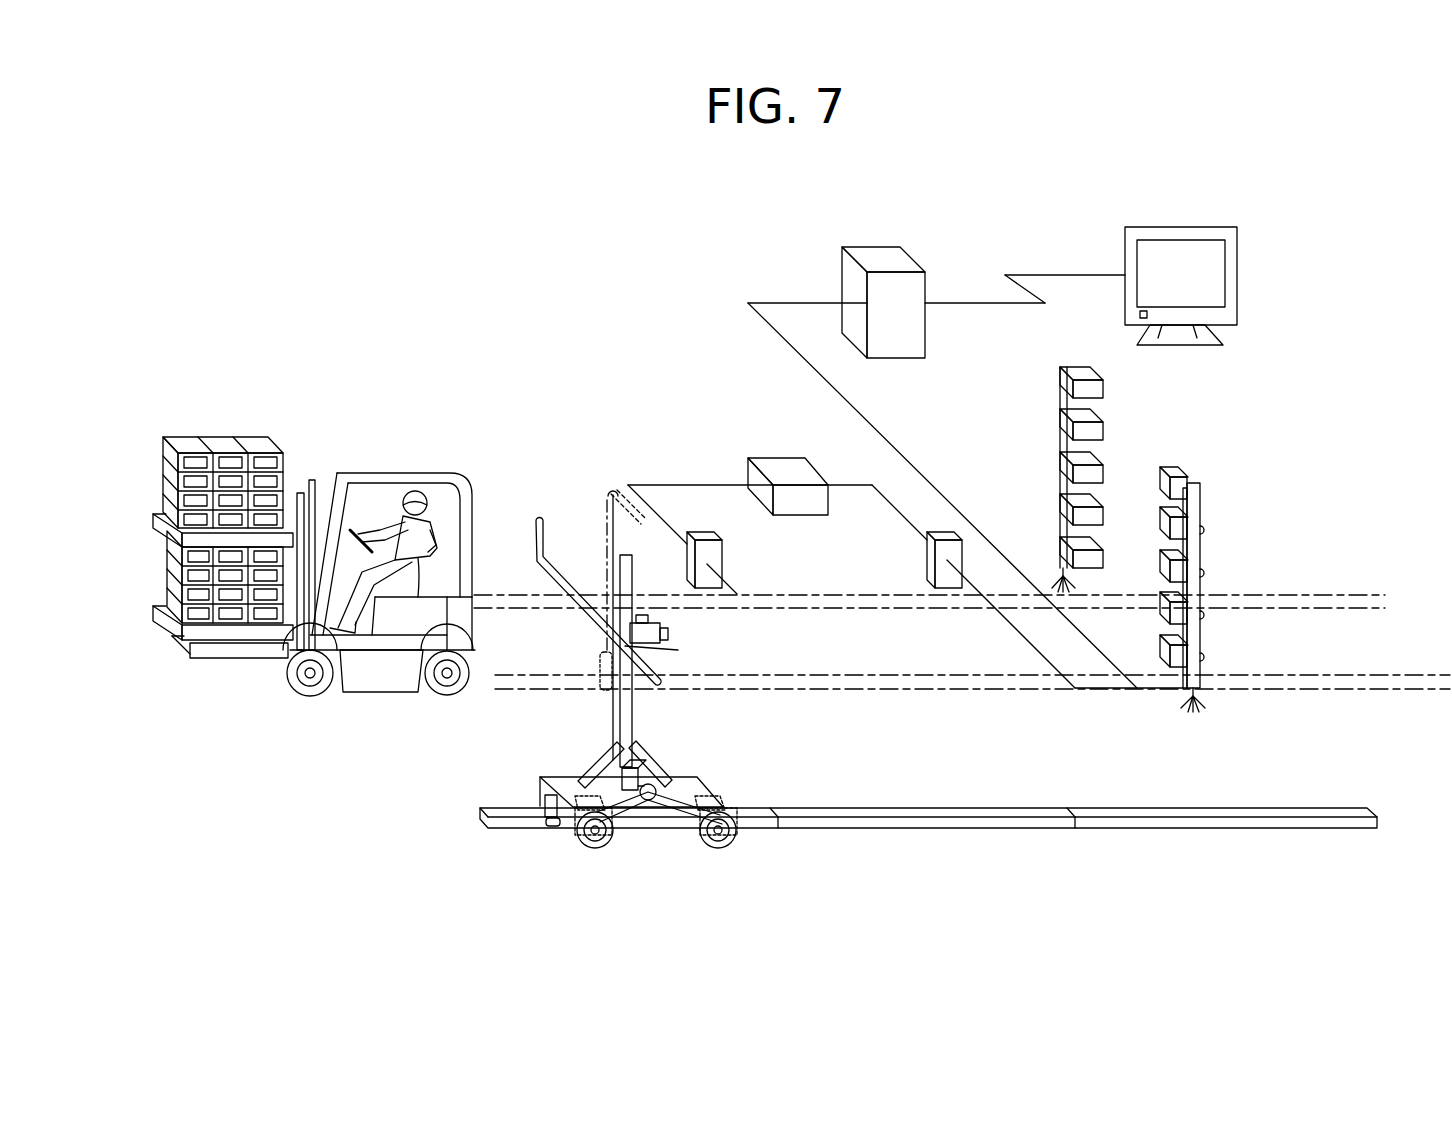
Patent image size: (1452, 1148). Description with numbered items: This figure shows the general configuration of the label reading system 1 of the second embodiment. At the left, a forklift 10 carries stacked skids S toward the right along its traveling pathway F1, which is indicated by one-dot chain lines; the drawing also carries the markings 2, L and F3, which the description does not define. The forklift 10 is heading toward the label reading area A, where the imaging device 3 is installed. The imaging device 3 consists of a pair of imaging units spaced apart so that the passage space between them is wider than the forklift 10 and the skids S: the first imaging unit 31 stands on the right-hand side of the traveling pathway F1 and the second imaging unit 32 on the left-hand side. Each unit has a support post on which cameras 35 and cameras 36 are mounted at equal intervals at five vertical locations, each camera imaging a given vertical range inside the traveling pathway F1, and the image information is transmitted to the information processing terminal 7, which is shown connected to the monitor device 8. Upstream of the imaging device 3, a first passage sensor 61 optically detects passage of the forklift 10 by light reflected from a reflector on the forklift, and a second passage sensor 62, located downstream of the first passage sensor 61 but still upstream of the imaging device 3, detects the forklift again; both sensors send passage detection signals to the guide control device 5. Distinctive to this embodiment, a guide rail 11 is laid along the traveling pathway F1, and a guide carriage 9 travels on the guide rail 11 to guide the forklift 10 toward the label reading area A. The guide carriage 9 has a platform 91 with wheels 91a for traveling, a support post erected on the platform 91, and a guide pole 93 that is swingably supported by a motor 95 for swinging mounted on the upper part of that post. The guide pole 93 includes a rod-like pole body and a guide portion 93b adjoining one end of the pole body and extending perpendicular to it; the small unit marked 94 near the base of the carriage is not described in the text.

The label reading system 1 is at (690, 350).
The article 2 is at (265, 458).
The label L is at (265, 462).
The skid S is at (212, 438).
The forklift 10 is at (405, 470).
The imaging device 3 is at (1212, 596).
The first imaging unit 31 is at (1208, 555).
The camera 35 is at (1178, 472).
The second imaging unit 32 is at (1071, 479).
The camera 36 is at (1093, 388).
The guide control device 5 is at (765, 460).
The first passage sensor 61 is at (724, 548).
The second passage sensor 62 is at (925, 560).
The information processing terminal 7 is at (876, 250).
The monitor device 8 is at (1196, 228).
The guide carriage 9 is at (630, 692).
The platform 91 is at (650, 813).
The wheel 91a is at (595, 850).
The guide pole 93 is at (576, 612).
The guide portion 93b is at (538, 525).
The drive unit 94 is at (652, 756).
The motor for swinging 95 is at (648, 625).
The guide rail 11 is at (920, 808).
The label reading area A is at (1152, 440).
The traveling pathway F1 is at (1285, 690).
The direction F3 is at (1330, 640).